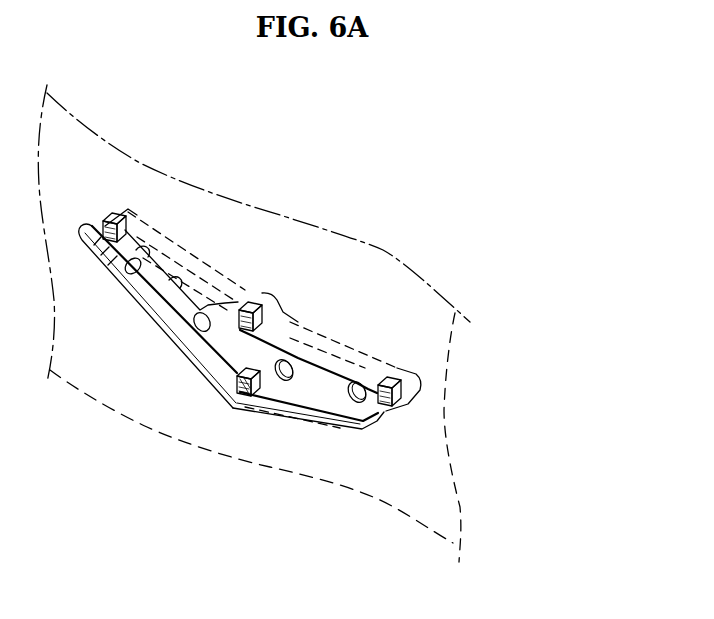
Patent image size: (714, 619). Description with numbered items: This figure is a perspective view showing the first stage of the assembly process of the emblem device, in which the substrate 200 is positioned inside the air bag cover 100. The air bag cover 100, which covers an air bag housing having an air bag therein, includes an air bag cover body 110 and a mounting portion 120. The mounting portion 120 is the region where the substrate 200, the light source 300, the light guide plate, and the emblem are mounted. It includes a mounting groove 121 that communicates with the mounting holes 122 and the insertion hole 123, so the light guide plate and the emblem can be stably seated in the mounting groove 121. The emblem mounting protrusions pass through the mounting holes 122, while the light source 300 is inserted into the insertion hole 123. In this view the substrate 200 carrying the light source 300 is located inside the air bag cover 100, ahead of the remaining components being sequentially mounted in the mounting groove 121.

The air bag cover 100 is at (568, 478).
The air bag cover body 110 is at (428, 453).
The mounting portion 120 is at (362, 428).
The mounting groove 121 is at (360, 383).
The mounting holes 122 is at (300, 362).
The insertion hole 123 is at (236, 406).
The substrate 200 is at (283, 321).
The light source 300 is at (254, 296).